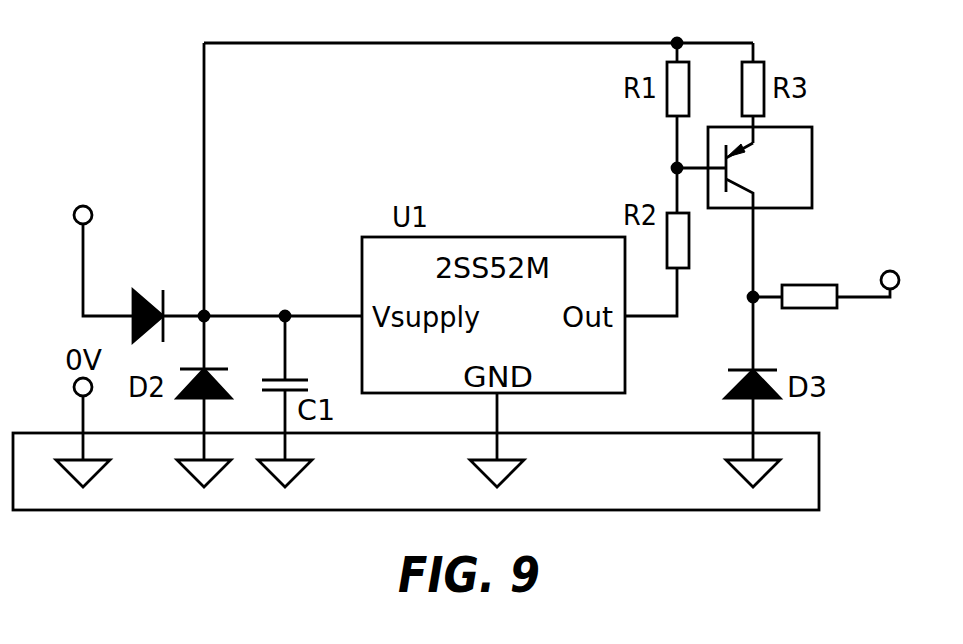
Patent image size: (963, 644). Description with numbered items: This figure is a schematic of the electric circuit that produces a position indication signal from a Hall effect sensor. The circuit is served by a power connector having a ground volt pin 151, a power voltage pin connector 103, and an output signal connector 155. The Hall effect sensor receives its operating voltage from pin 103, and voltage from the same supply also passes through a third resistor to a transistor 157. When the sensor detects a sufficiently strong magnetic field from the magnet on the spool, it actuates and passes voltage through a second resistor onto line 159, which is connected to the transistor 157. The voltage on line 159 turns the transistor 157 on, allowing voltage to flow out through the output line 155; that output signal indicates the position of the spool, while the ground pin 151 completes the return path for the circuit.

The power voltage pin connector 103 is at (83, 242).
The ground volt pin 151 is at (677, 497).
The output signal connector 155 is at (862, 297).
The transistor 157 is at (803, 127).
The line 159 is at (675, 187).